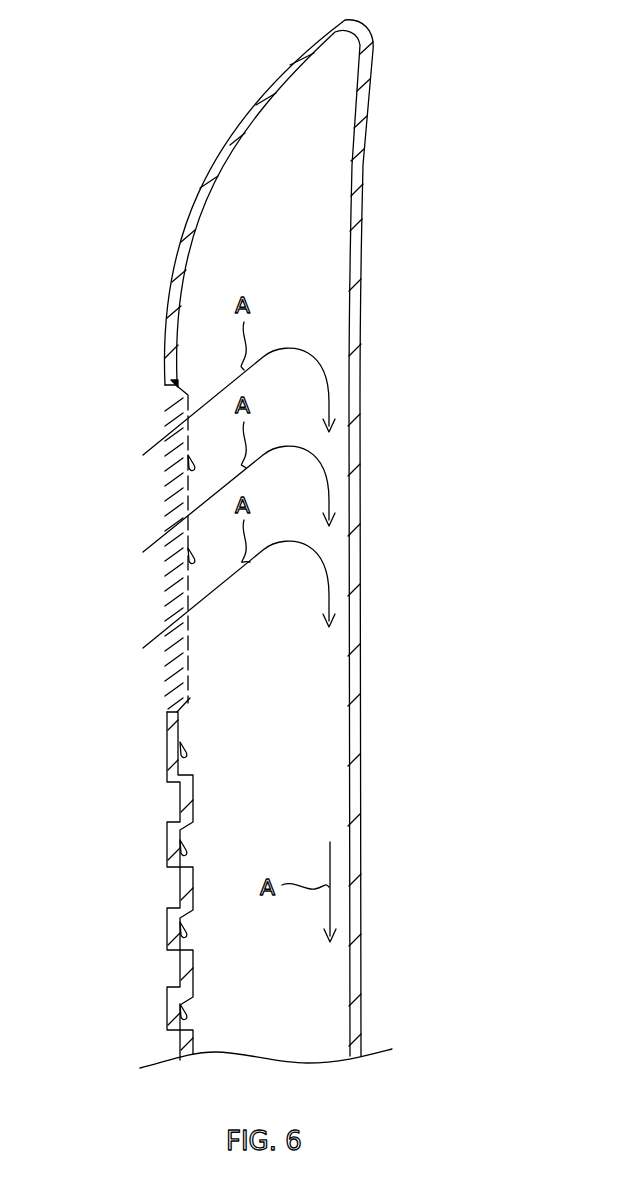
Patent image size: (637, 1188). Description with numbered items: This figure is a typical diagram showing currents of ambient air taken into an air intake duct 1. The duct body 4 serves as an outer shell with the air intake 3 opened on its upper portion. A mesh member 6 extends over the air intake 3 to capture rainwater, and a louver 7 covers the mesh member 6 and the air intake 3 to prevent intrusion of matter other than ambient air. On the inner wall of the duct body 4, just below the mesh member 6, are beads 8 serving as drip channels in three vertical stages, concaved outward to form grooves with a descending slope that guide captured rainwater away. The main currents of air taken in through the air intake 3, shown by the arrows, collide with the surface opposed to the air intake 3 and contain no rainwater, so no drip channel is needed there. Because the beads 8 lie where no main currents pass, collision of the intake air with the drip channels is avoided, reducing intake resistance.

The blower body 1 is at (370, 309).
The air intake 3 is at (166, 503).
The duct body 4 is at (361, 352).
The mesh member 6 is at (190, 672).
The louver 7 is at (160, 420).
The beads 8 is at (186, 848).